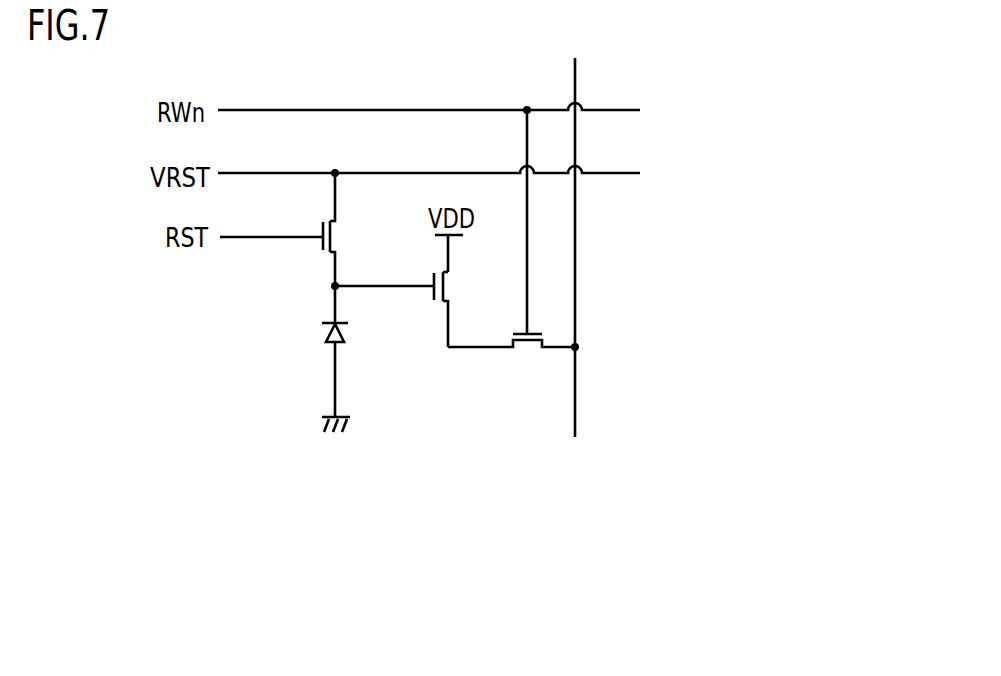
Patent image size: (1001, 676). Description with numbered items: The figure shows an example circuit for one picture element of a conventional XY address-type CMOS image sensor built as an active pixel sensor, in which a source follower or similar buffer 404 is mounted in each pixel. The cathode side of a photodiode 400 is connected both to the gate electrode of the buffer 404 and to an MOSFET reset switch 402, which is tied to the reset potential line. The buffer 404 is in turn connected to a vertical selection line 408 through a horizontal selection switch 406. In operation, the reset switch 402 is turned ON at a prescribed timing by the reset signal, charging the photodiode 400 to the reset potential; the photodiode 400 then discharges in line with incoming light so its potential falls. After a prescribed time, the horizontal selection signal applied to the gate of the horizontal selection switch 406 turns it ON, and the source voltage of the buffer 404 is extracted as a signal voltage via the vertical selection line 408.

The photodiode 400 is at (327, 334).
The MOSFET reset switch 402 is at (337, 238).
The buffer 404 is at (450, 288).
The horizontal selection switch 406 is at (528, 350).
The vertical selection line 408 is at (575, 272).